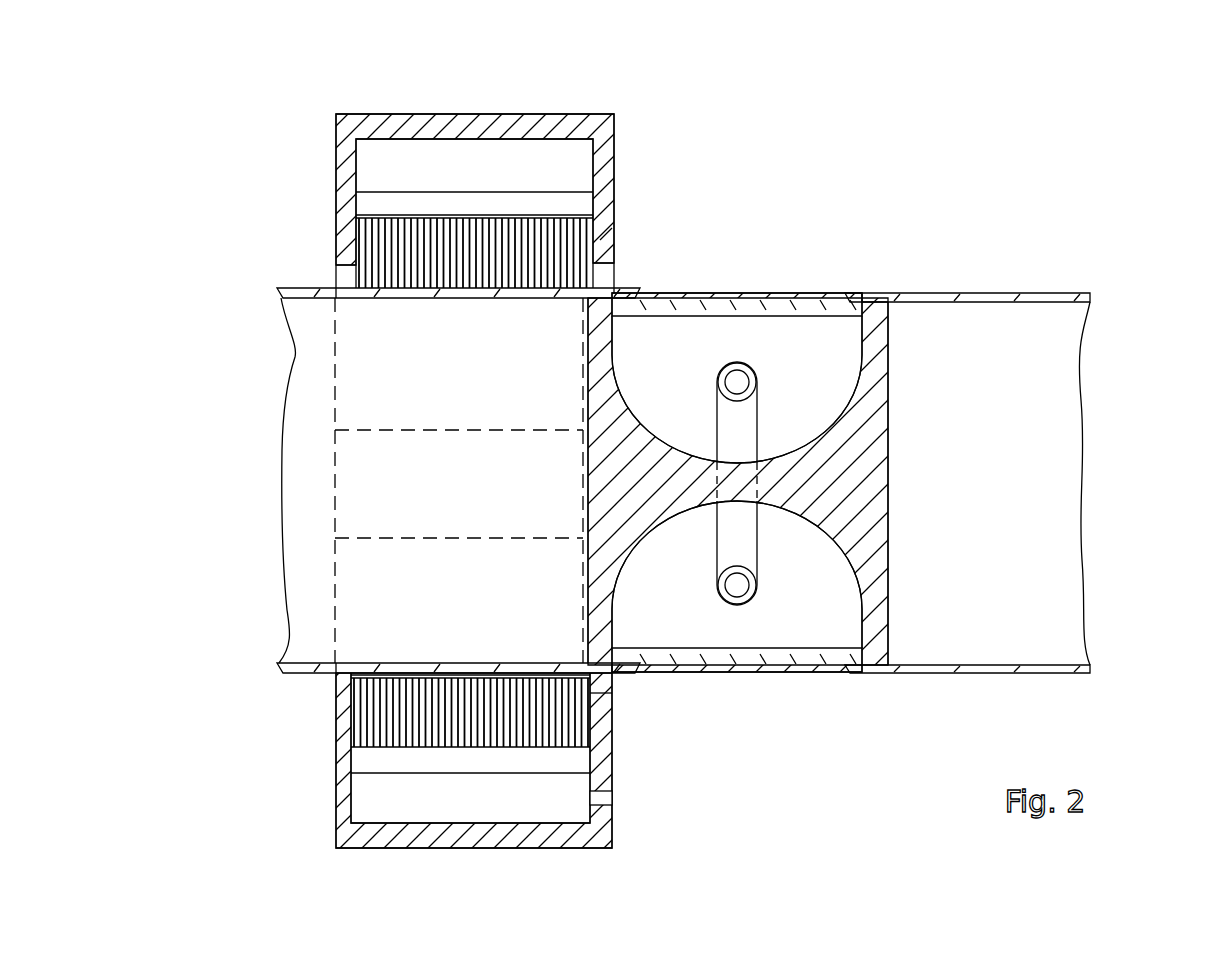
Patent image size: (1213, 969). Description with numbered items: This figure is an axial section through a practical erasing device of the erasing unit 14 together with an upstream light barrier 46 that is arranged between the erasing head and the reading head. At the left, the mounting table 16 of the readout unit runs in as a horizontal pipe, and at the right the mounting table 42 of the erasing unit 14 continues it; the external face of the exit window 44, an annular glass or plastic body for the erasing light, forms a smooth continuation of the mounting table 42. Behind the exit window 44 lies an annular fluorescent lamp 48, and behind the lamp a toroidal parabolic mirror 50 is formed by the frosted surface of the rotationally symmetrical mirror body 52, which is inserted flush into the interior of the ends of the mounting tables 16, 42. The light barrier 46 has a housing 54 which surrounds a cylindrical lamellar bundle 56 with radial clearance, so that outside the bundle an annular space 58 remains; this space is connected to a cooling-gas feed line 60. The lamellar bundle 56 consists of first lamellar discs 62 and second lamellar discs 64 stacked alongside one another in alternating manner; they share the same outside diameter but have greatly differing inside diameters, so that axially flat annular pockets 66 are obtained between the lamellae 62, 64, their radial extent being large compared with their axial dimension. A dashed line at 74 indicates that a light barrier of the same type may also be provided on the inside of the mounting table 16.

The erasing unit 14 is at (1019, 178).
The mounting table 16 is at (308, 454).
The mounting table 42 is at (1045, 472).
The exit window 44 is at (816, 308).
The light barrier 46 is at (286, 207).
The annular fluorescent lamp 48 is at (748, 364).
The toroidal parabolic mirror 50 is at (808, 415).
The mirror body 52 is at (845, 508).
The housing 54 is at (603, 247).
The lamellar bundle 56 is at (368, 698).
The annular space 58 is at (360, 795).
The cooling-gas feed line 60 is at (614, 798).
The first lamellar discs 62 is at (417, 289).
The second lamellar discs 64 is at (450, 195).
The annular pockets 66 is at (478, 289).
The dashed line 74 is at (324, 362).